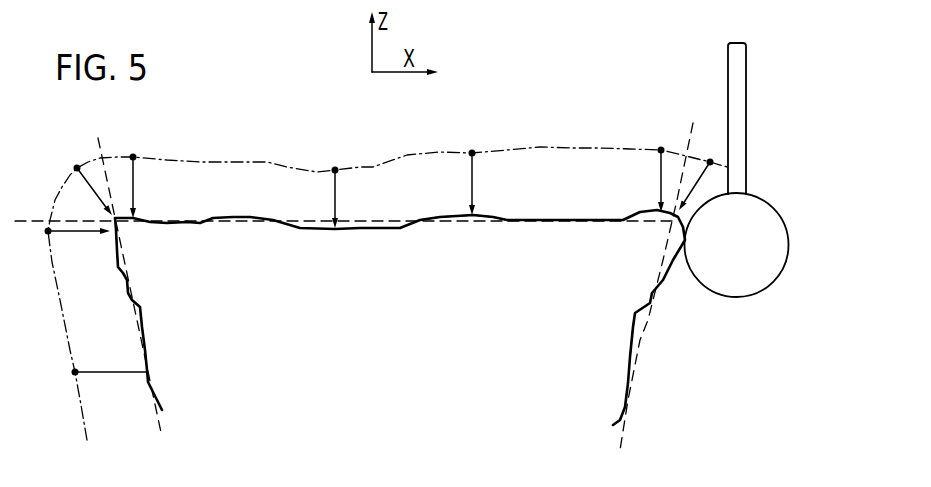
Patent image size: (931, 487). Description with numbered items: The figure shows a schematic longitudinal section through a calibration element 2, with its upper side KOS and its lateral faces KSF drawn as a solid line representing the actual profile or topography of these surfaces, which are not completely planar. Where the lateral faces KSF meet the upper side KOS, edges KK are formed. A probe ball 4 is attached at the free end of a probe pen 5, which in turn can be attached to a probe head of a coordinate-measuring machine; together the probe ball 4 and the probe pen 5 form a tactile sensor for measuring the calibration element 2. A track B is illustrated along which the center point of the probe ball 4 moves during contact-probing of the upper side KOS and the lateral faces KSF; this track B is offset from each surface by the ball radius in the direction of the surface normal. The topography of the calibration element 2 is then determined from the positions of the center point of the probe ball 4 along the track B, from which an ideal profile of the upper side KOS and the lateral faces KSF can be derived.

The calibration element 2 is at (569, 385).
The probe ball 4 is at (777, 210).
The probe pen 5 is at (746, 125).
The edges KK is at (115, 220).
The track B is at (233, 162).
The upper side KOS is at (537, 218).
The lateral faces KSF is at (127, 293).